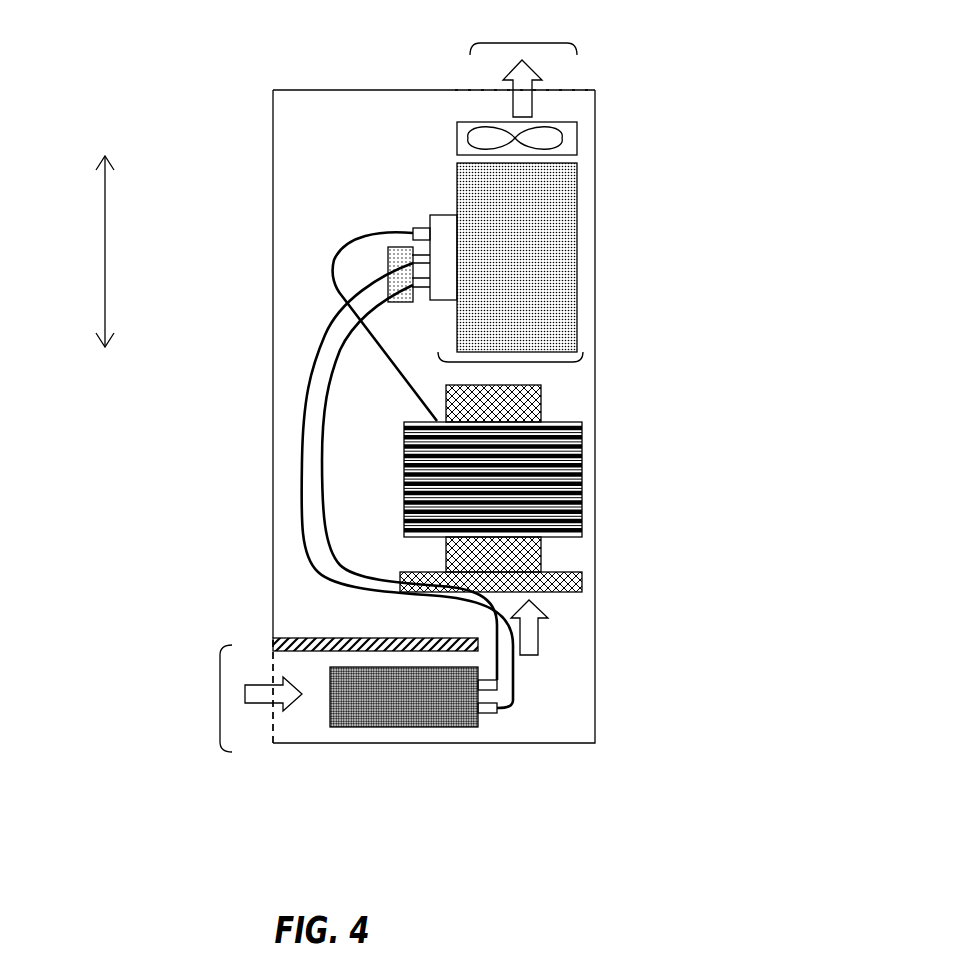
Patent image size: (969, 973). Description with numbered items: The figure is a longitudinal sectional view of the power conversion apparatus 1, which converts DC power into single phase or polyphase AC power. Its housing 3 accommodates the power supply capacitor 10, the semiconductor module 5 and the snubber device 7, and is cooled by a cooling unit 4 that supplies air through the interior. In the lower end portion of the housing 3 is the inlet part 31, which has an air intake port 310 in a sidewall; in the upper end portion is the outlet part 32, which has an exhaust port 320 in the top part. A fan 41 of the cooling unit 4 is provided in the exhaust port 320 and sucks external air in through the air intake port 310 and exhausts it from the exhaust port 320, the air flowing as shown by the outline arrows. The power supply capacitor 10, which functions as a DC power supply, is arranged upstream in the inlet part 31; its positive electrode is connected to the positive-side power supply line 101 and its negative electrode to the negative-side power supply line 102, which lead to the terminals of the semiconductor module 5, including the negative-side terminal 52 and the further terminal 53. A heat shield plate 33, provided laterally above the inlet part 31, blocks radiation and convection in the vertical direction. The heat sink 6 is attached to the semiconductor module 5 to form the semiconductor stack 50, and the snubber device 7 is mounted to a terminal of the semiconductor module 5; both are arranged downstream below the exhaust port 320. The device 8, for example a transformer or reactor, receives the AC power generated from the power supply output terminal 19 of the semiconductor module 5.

The power conversion apparatus 1 is at (257, 27).
The housing 3 is at (330, 90).
The cooling unit 4 is at (386, 128).
The semiconductor module 5 is at (432, 215).
The heat sink 6 is at (577, 255).
The snubber device 7 is at (400, 303).
The device 8 is at (582, 478).
The power supply capacitor 10 is at (410, 727).
The power supply output terminal 19 is at (432, 230).
The inlet part 31 is at (220, 698).
The outlet part 32 is at (525, 43).
The heat shield plate 33 is at (273, 638).
The fan 41 is at (577, 142).
The semiconductor stack 50 is at (510, 362).
The negative-side terminal 52 is at (432, 278).
The terminal 53 is at (432, 253).
The positive-side power supply line 101 is at (313, 380).
The negative-side power supply line 102 is at (320, 470).
The air intake port 310 is at (273, 745).
The exhaust port 320 is at (589, 90).